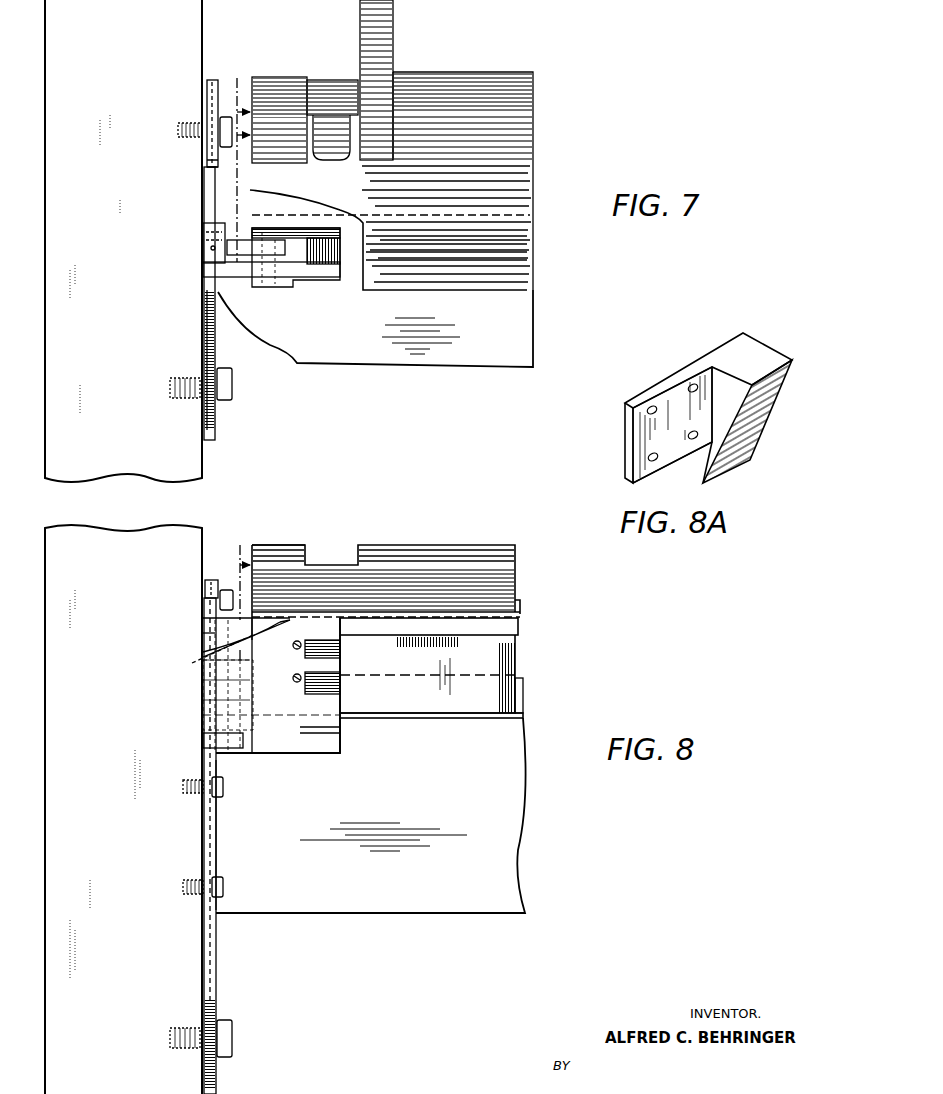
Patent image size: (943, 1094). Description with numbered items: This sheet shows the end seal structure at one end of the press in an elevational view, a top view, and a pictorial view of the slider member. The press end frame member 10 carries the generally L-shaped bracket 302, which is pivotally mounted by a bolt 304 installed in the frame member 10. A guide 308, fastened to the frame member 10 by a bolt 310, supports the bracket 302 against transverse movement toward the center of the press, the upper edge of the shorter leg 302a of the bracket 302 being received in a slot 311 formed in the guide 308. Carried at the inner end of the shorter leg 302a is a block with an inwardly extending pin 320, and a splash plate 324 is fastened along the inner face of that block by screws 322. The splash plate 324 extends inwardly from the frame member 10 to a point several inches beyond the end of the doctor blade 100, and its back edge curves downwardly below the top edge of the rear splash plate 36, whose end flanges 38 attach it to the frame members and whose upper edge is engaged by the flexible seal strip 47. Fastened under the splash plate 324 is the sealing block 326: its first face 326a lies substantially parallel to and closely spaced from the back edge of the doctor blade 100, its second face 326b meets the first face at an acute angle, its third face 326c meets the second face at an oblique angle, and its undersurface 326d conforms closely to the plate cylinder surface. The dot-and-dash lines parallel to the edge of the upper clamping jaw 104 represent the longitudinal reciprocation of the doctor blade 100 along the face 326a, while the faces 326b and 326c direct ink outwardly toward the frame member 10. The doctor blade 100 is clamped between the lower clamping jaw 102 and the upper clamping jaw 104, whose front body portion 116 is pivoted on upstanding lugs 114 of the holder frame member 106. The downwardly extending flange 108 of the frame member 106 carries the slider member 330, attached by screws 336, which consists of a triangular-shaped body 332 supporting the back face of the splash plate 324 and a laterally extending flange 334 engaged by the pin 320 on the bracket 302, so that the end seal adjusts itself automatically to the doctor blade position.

In FIG. 7, the end frame member 10 is at (46, 292).
In FIG. 8, the end frame member 10 is at (46, 578).
In FIG. 7, the splash plate 36 is at (510, 345).
In FIG. 8, the splash plate 36 is at (503, 843).
In FIG. 8, the flange 38 is at (216, 833).
In FIG. 8, the flexible seal strip 47 is at (523, 716).
In FIG. 7, the doctor blade 100 is at (527, 288).
In FIG. 8, the doctor blade 100 is at (518, 607).
In FIG. 8, the lower clamping jaw 102 is at (518, 632).
In FIG. 8, the upper clamping jaw 104 is at (448, 535).
In FIG. 8, the holder frame member 106 is at (522, 659).
In FIG. 8, the downwardly extending flange 108 is at (508, 693).
In FIG. 7, the upstanding lugs 114 is at (328, 90).
In FIG. 7, the front body portion 116 is at (513, 128).
In FIG. 8, the front body portion 116 is at (507, 568).
In FIG. 7, the L-shaped bracket 302 is at (203, 230).
In FIG. 8, the L-shaped bracket 302 is at (222, 968).
In FIG. 7, the shorter leg 302a is at (207, 328).
In FIG. 7, the bolt 304 is at (232, 403).
In FIG. 8, the bolt 304 is at (232, 1053).
In FIG. 7, the guide 308 is at (219, 82).
In FIG. 8, the guide 308 is at (207, 582).
In FIG. 7, the bolt 310 is at (194, 122).
In FIG. 7, the slot 311 is at (207, 163).
In FIG. 7, the pin 320 is at (280, 258).
In FIG. 8, the pin 320 is at (278, 653).
In FIG. 8, the screws 322 is at (207, 693).
In FIG. 7, the splash plate 324 is at (240, 214).
In FIG. 8, the splash plate 324 is at (217, 740).
In FIG. 8, the sealing block 326 is at (213, 615).
In FIG. 8, the first face 326a is at (247, 603).
In FIG. 8, the second face 326b is at (287, 632).
In FIG. 8, the third face 326c is at (240, 650).
In FIG. 8, the undersurface 326d is at (203, 633).
In FIG. 7, the slider member 330 is at (335, 248).
In FIG. 8A, the slider member 330 is at (723, 388).
In FIG. 8, the slider member 330 is at (367, 670).
In FIG. 7, the triangular-shaped body 332 is at (340, 242).
In FIG. 8A, the triangular-shaped body 332 is at (753, 423).
In FIG. 8, the triangular-shaped body 332 is at (330, 685).
In FIG. 7, the flange 334 is at (290, 228).
In FIG. 8A, the flange 334 is at (673, 395).
In FIG. 8, the flange 334 is at (300, 653).
In FIG. 8, the screws 336 is at (301, 681).